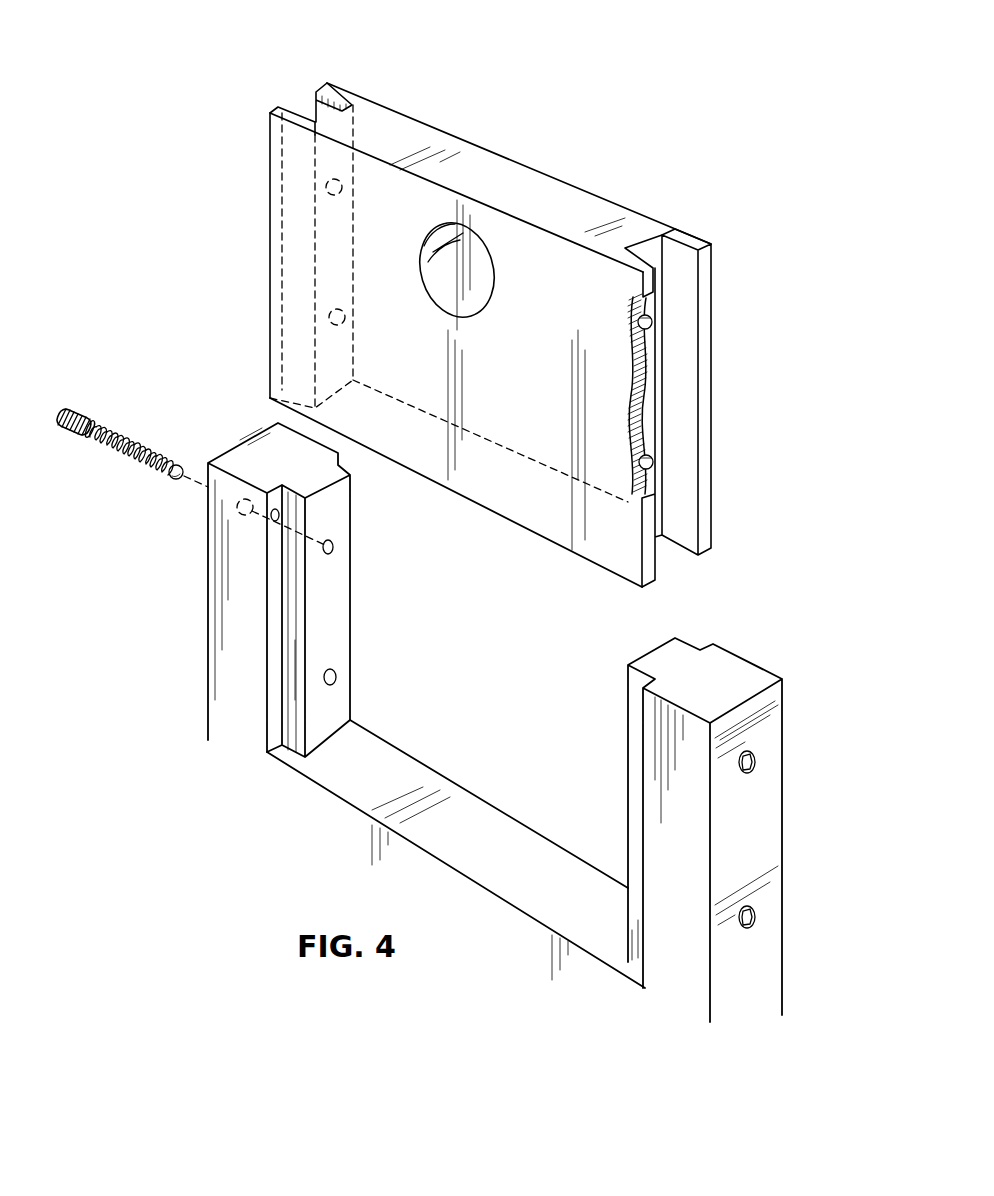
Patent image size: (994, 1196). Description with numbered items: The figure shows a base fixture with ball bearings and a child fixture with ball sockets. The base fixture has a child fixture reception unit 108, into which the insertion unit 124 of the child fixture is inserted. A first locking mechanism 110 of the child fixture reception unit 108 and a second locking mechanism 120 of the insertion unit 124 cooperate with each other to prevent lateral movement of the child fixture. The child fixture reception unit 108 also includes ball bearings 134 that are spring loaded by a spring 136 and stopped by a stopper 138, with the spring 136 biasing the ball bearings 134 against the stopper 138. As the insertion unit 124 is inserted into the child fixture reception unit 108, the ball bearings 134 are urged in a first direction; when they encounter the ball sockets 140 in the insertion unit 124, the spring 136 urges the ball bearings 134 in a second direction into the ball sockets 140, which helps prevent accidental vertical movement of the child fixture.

The child fixture reception unit 108 is at (522, 722).
The first locking mechanism 110 is at (339, 497).
The second locking mechanism 120 is at (294, 110).
The insertion unit 124 is at (514, 180).
The ball bearings 134 is at (183, 463).
The spring 136 is at (128, 440).
The stopper 138 is at (84, 412).
The ball sockets 140 is at (325, 187).